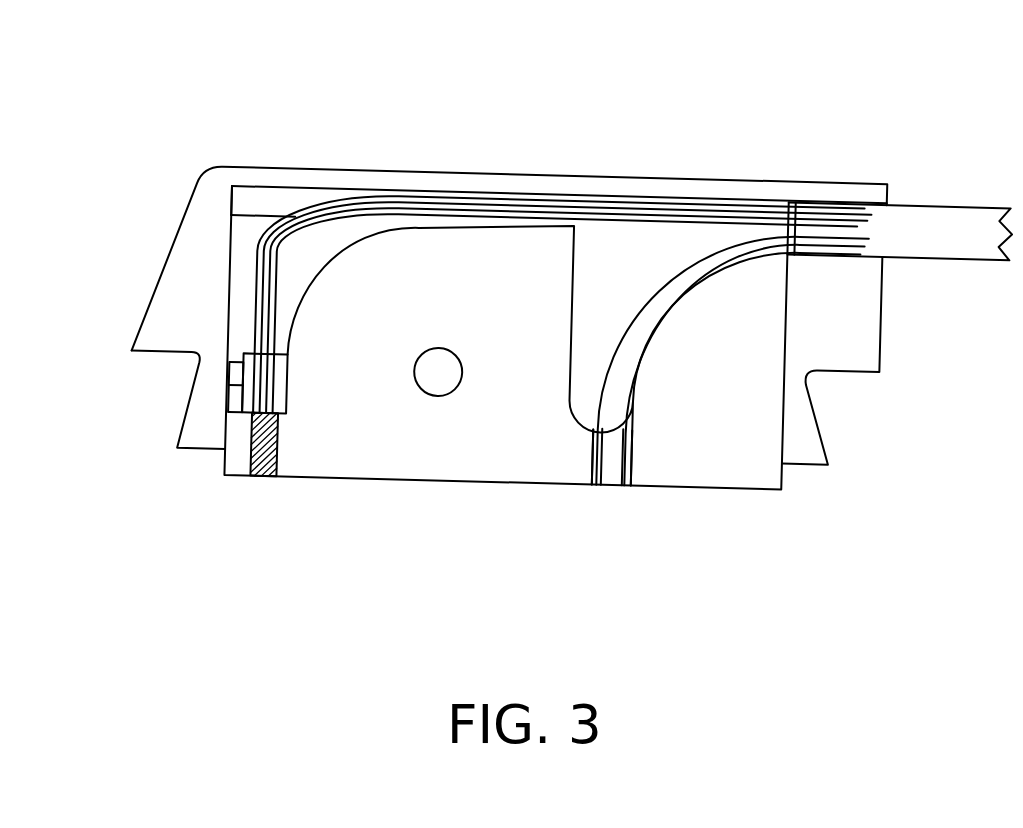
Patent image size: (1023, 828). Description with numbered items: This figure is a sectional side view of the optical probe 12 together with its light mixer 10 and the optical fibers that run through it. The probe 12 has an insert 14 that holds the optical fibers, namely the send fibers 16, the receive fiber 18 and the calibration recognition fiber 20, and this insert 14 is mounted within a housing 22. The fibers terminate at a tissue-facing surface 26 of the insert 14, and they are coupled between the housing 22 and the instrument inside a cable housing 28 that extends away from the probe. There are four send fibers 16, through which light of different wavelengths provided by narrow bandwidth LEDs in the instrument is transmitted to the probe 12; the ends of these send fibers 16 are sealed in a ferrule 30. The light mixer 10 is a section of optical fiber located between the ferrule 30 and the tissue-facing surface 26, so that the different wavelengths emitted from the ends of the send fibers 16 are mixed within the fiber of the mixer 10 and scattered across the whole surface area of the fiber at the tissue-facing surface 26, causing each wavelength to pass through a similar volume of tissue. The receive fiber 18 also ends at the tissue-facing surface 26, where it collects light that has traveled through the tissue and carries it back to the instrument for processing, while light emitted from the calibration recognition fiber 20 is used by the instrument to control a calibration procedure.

The light mixer 10 is at (277, 455).
The optical probe 12 is at (700, 143).
The insert 14 is at (268, 230).
The send fibers 16 is at (318, 245).
The receive fiber 18 is at (632, 465).
The calibration recognition fiber 20 is at (600, 465).
The housing 22 is at (196, 256).
The tissue-facing surface 26 is at (425, 479).
The cable housing 28 is at (947, 207).
The ferrule 30 is at (243, 392).